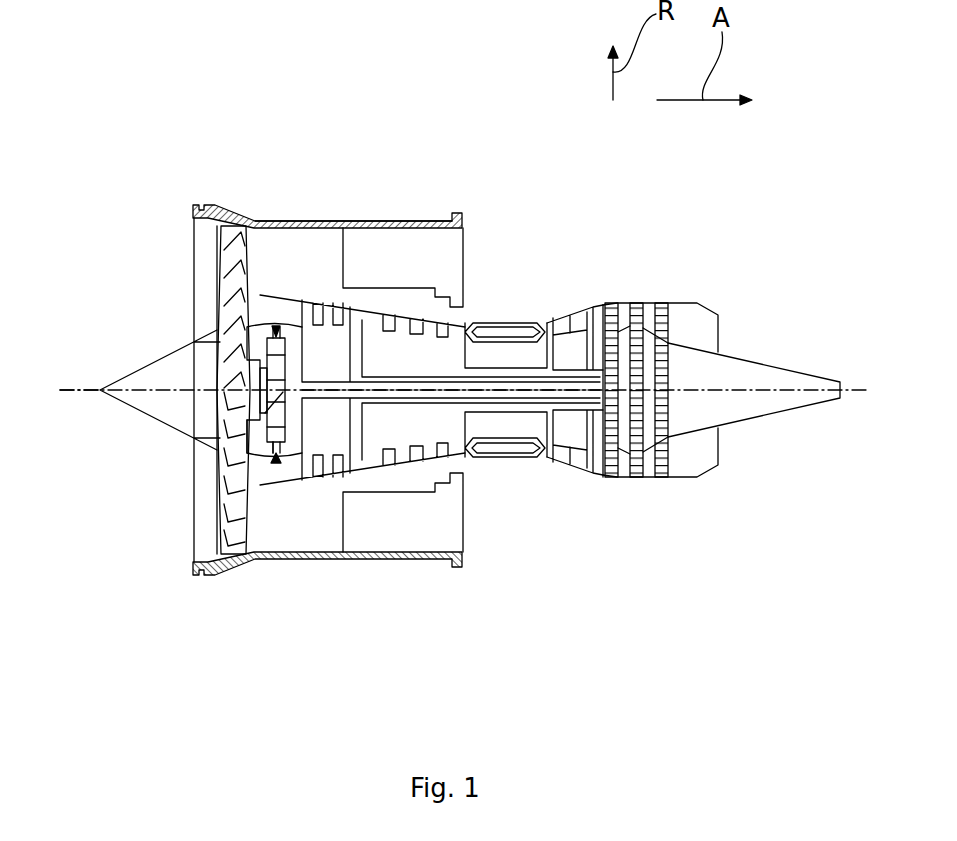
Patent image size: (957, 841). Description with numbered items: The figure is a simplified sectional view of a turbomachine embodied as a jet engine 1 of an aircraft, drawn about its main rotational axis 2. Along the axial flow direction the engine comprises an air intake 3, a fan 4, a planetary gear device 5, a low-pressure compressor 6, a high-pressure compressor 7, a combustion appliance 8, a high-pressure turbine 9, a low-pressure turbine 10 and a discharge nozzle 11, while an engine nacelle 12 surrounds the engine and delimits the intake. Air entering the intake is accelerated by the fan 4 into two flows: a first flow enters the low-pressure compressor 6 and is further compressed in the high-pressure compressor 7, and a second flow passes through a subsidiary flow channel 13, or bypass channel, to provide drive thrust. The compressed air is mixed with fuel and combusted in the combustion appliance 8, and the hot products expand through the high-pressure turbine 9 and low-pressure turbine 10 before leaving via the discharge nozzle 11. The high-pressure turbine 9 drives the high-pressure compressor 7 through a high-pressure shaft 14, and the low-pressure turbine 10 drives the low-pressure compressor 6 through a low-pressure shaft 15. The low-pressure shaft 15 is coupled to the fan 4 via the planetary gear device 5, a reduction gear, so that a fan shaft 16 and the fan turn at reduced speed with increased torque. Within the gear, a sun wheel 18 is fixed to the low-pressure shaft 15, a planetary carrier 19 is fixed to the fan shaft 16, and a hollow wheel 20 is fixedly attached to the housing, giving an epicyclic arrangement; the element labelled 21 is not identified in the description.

The jet engine 1 is at (722, 222).
The main rotational axis 2 is at (83, 390).
The air intake 3 is at (168, 244).
The fan 4 is at (257, 413).
The planetary gear device 5 is at (280, 459).
The low-pressure compressor 6 is at (338, 310).
The high-pressure compressor 7 is at (453, 347).
The combustion appliance 8 is at (503, 452).
The high-pressure turbine 9 is at (587, 318).
The low-pressure turbine 10 is at (635, 302).
The discharge nozzle 11 is at (712, 335).
The engine nacelle 12 is at (403, 219).
The subsidiary flow channel 13 is at (457, 247).
The high-pressure shaft 14 is at (565, 402).
The low-pressure shaft 15 is at (412, 474).
The fan shaft 16 is at (250, 408).
The sun wheel 18 is at (258, 458).
The planetary carrier 19 is at (195, 342).
The hollow wheel 20 is at (279, 343).
The sensor 21 is at (266, 364).